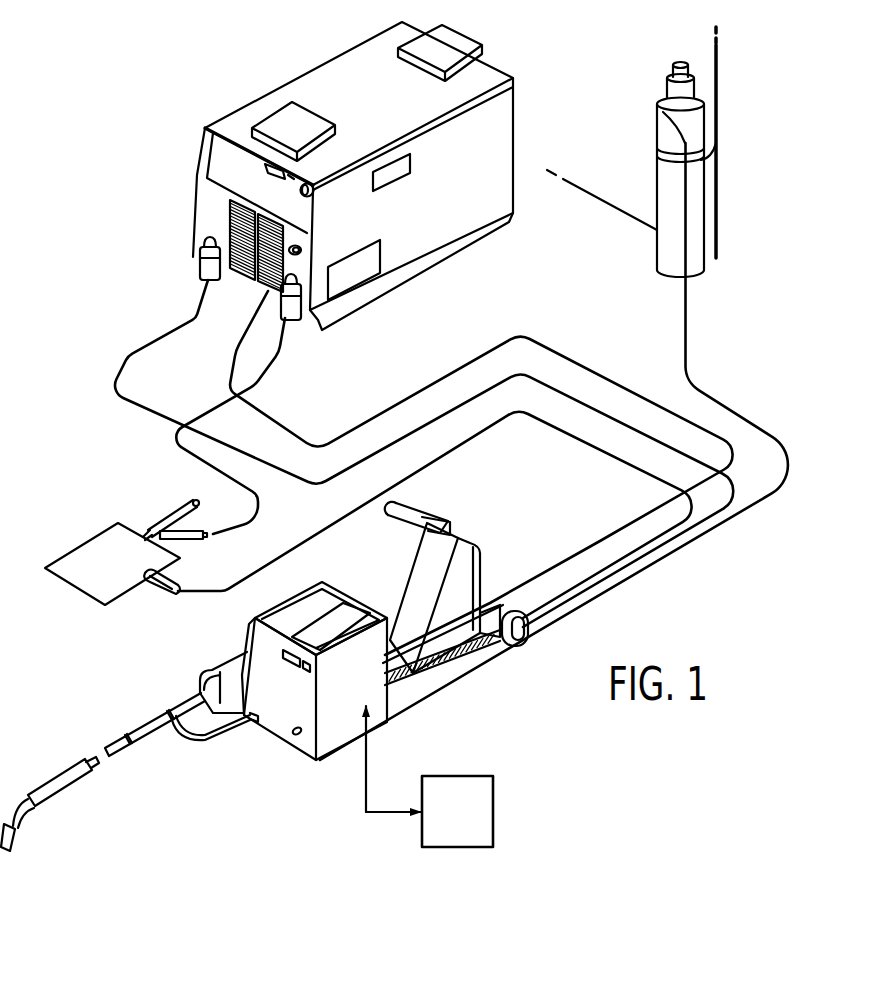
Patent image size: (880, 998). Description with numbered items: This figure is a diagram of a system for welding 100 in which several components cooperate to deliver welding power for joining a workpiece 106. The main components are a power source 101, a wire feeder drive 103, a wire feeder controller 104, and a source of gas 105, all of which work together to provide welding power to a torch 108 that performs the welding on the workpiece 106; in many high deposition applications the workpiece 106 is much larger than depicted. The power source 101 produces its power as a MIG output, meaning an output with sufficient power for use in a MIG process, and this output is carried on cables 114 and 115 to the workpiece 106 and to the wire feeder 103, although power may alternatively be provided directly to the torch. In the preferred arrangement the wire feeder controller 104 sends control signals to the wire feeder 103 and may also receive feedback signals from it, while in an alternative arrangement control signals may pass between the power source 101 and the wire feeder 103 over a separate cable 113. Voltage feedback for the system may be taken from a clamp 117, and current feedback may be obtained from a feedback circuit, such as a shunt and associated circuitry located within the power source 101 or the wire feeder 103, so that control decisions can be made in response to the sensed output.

The system for welding 100 is at (80, 138).
The power source 101 is at (240, 108).
The wire feeder drive 103 is at (420, 707).
The wire feeder controller 104 is at (493, 808).
The source of gas 105 is at (698, 200).
The workpiece 106 is at (82, 543).
The torch 108 is at (60, 797).
The cable 113 is at (240, 337).
The cable 114 is at (123, 368).
The cable 115 is at (163, 443).
The clamp 117 is at (158, 593).